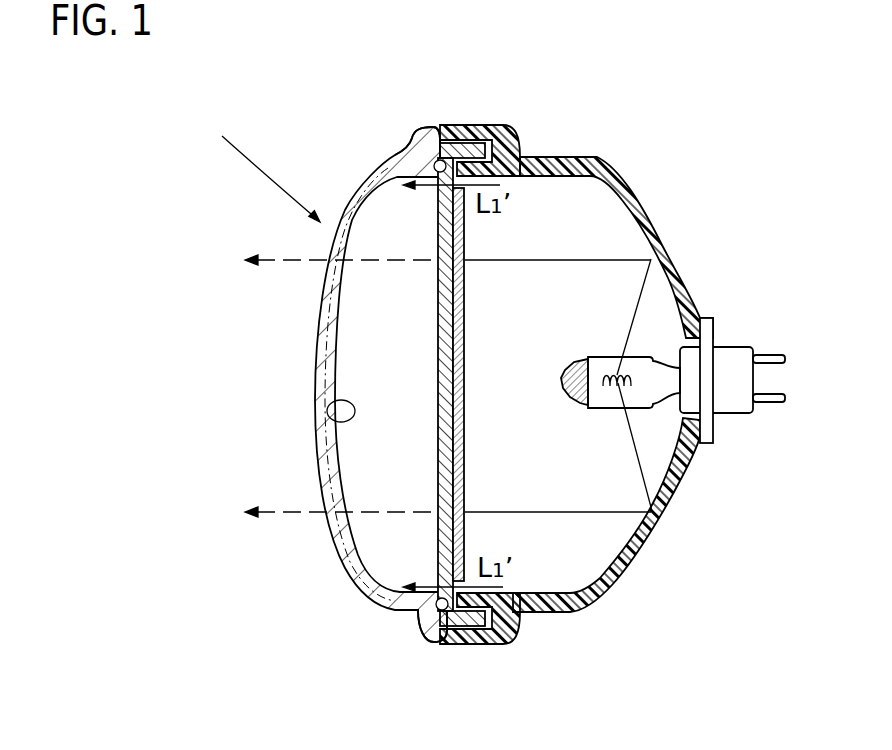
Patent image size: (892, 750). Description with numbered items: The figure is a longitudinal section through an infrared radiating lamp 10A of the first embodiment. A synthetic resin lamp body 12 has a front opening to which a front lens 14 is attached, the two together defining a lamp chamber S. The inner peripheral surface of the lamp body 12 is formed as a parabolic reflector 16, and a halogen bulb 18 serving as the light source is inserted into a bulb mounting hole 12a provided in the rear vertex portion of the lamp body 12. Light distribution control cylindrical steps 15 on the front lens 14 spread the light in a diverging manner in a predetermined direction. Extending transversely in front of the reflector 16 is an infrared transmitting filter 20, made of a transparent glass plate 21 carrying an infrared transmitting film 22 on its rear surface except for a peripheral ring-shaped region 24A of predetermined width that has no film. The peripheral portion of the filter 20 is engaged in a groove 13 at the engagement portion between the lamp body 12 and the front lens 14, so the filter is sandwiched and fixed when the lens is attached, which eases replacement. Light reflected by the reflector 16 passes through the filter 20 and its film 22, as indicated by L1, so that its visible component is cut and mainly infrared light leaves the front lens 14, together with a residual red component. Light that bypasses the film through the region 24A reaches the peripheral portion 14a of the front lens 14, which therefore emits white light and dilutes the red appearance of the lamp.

The infrared radiating lamp 10A is at (257, 163).
The lamp body 12 is at (640, 200).
The bulb mounting hole 12a is at (692, 412).
The groove 13 is at (422, 135).
The front lens 14 is at (318, 347).
The peripheral portion of the front lens 14a is at (405, 138).
The light distribution control cylindrical steps 15 is at (327, 420).
The parabolic reflector 16 is at (672, 318).
The halogen bulb 18 is at (652, 402).
The infrared transmitting filter 20 is at (537, 270).
The glass plate 21 is at (465, 293).
The infrared transmitting film 22 is at (465, 342).
The ring-shaped region 24A is at (523, 143).
The light passing through the infrared transmitting film L1 is at (448, 372).
The lamp chamber S is at (533, 424).